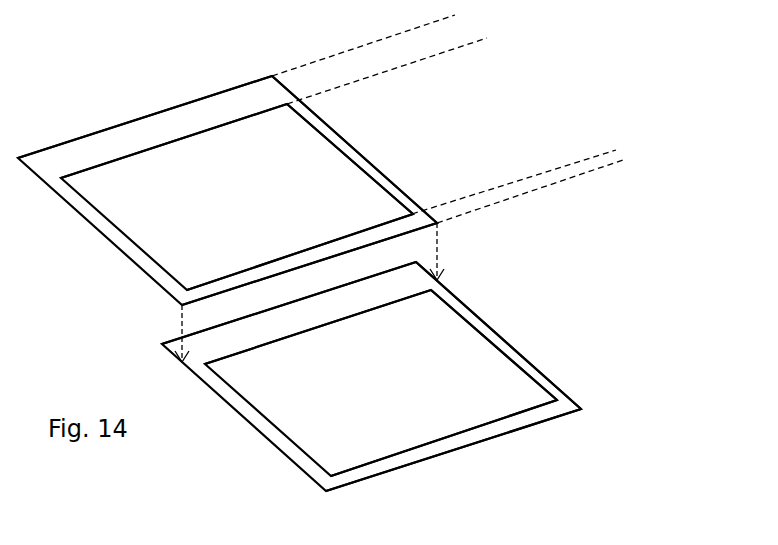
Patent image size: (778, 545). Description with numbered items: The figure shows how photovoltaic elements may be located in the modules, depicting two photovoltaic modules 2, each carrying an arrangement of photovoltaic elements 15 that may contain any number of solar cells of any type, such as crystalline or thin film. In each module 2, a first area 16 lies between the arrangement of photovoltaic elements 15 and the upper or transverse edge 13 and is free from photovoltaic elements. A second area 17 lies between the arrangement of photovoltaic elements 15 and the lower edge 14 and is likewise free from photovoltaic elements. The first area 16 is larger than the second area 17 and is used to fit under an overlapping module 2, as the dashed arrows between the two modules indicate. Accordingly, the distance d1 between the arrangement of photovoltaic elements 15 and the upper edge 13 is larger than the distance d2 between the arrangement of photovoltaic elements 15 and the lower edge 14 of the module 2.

The photovoltaic module 2 is at (349, 266).
The upper or transverse edge 13 is at (90, 133).
The lower edge 14 is at (413, 228).
The arrangement of photovoltaic elements 15 is at (248, 193).
The first area 16 is at (230, 119).
The second area 17 is at (378, 235).
The distance between the arrangement of photovoltaic elements and the upper edge d1 is at (384, 56).
The distance between the arrangement of photovoltaic elements and the lower edge d2 is at (535, 181).